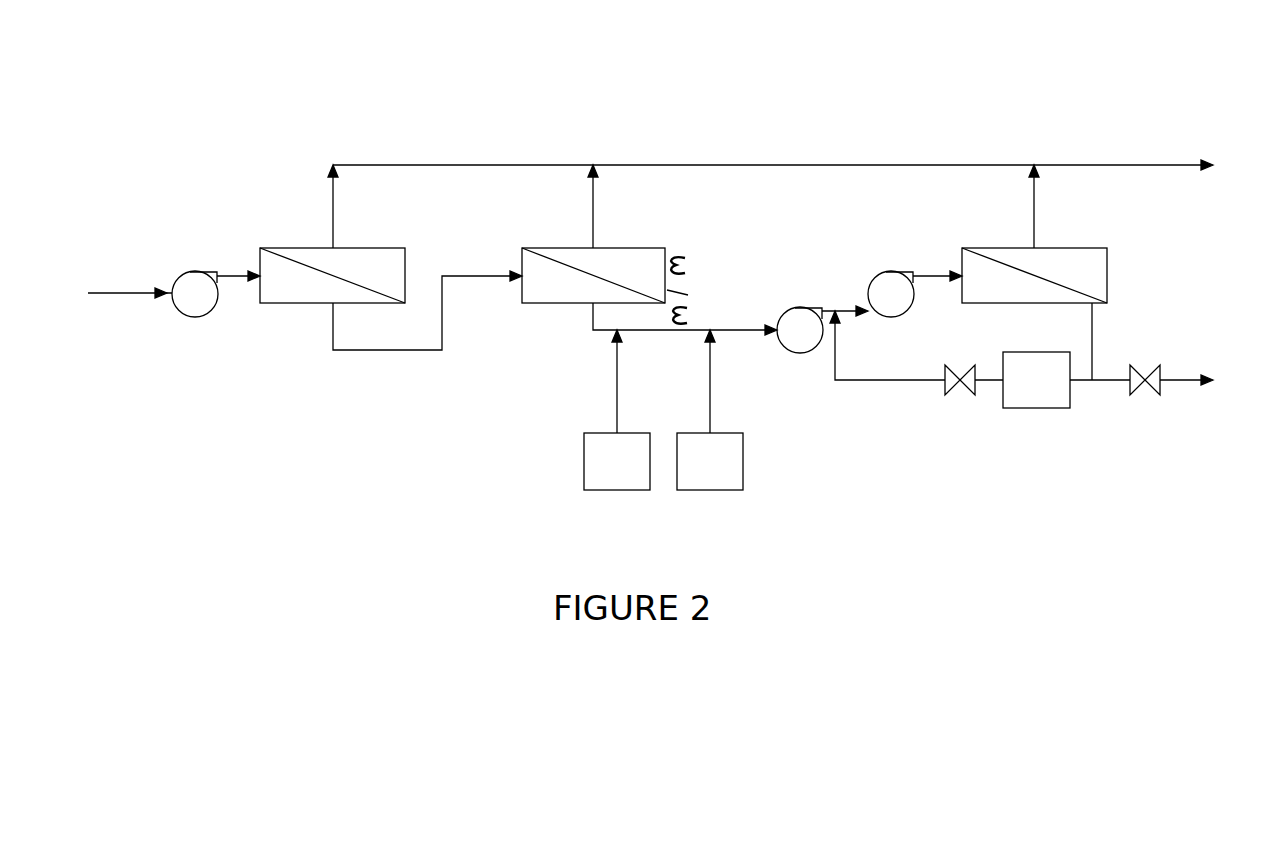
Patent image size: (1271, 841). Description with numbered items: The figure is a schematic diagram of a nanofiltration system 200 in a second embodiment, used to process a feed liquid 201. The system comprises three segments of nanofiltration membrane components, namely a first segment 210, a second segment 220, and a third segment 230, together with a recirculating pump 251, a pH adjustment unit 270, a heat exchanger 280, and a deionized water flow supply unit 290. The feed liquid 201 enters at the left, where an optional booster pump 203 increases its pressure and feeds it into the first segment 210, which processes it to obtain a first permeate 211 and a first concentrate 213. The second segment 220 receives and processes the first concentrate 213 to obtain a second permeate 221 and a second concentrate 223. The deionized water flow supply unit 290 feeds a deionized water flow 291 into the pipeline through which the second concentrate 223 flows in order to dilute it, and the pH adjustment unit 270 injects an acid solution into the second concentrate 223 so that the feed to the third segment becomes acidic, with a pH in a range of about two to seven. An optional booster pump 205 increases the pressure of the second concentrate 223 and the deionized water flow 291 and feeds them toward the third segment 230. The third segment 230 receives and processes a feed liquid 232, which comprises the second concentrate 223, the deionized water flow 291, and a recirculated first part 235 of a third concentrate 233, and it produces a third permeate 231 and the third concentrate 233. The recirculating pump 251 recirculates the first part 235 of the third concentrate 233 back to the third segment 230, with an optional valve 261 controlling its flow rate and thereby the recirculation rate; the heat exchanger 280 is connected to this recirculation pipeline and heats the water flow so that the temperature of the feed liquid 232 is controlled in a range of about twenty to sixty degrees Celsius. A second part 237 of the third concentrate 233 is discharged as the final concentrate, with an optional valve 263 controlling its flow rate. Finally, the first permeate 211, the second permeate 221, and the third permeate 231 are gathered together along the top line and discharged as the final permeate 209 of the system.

The nanofiltration system 200 is at (955, 68).
The feed liquid 201 is at (127, 292).
The booster pump 203 is at (195, 317).
The booster pump 205 is at (800, 355).
The final permeate 209 is at (1135, 165).
The first segment 210 is at (288, 247).
The first permeate 211 is at (333, 218).
The first concentrate 213 is at (378, 352).
The second segment 220 is at (550, 247).
The second permeate 221 is at (593, 218).
The second concentrate 223 is at (685, 325).
The third segment 230 is at (985, 247).
The third permeate 231 is at (1034, 213).
The feed liquid 232 is at (930, 273).
The third concentrate 233 is at (1092, 340).
The first part of the third concentrate 235 is at (875, 380).
The second part of the third concentrate 237 is at (1180, 380).
The recirculating pump 251 is at (883, 273).
The valve 261 is at (960, 380).
The valve 263 is at (1145, 380).
The pH adjustment unit 270 is at (743, 462).
The heat exchanger 280 is at (1035, 408).
The deionized water flow supply unit 290 is at (583, 462).
The deionized water flow 291 is at (617, 400).